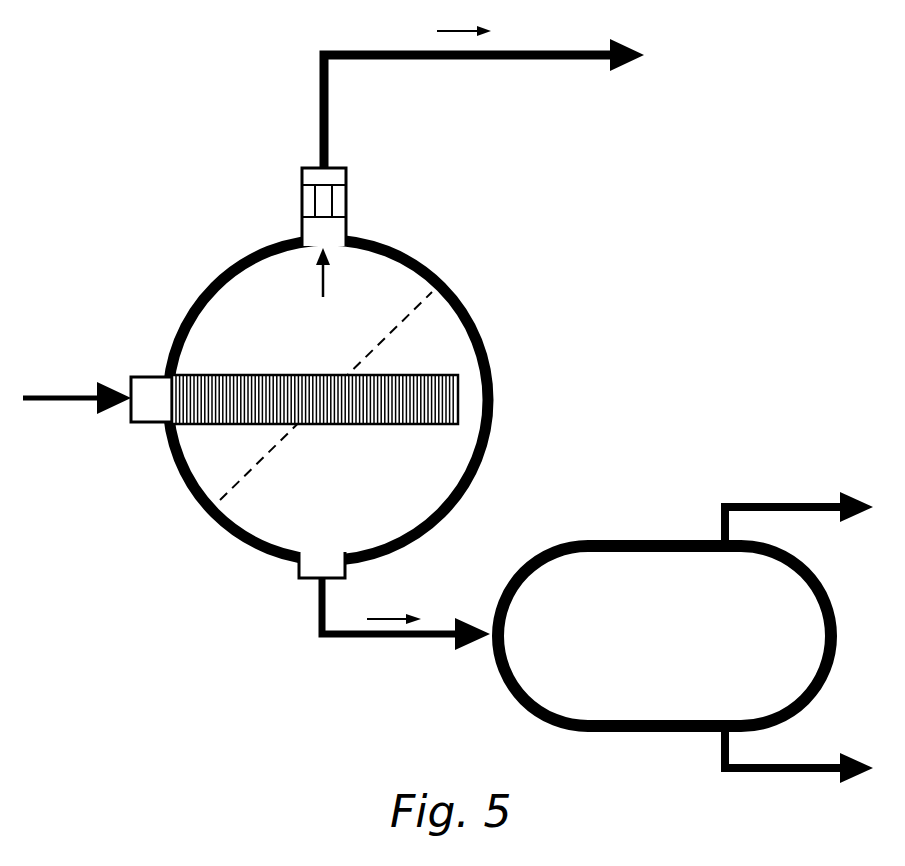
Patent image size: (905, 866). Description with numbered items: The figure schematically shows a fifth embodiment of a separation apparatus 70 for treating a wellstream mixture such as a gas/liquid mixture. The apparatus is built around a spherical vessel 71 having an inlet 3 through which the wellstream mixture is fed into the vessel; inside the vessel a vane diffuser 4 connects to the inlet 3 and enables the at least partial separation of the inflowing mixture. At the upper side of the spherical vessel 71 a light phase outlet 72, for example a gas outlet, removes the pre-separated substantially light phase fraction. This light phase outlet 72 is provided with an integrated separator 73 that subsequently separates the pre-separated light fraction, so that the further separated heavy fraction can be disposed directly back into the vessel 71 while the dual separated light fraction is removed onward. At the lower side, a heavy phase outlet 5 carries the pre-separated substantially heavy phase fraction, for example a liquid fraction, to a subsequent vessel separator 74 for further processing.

The separation apparatus 70 is at (90, 139).
The spherical vessel 71 is at (182, 486).
The light phase outlet 72 is at (303, 175).
The integrated separator 73 is at (338, 197).
The inlet 3 is at (140, 376).
The vane diffuser 4 is at (345, 425).
The heavy phase outlet 5 is at (298, 572).
The subsequent vessel separator 74 is at (613, 518).